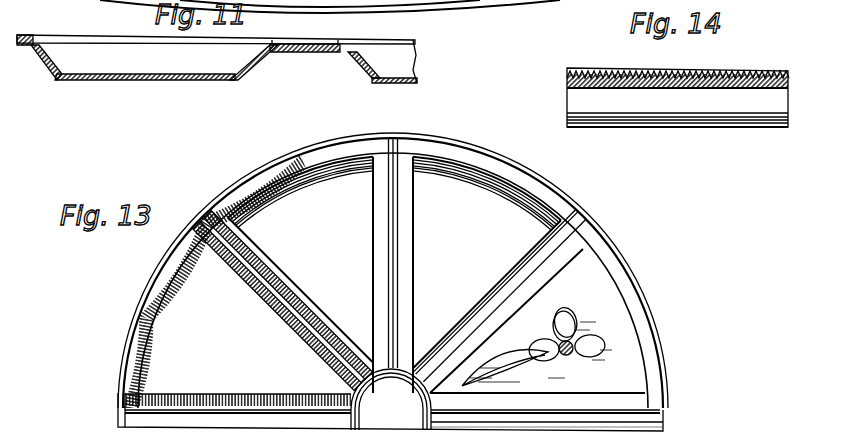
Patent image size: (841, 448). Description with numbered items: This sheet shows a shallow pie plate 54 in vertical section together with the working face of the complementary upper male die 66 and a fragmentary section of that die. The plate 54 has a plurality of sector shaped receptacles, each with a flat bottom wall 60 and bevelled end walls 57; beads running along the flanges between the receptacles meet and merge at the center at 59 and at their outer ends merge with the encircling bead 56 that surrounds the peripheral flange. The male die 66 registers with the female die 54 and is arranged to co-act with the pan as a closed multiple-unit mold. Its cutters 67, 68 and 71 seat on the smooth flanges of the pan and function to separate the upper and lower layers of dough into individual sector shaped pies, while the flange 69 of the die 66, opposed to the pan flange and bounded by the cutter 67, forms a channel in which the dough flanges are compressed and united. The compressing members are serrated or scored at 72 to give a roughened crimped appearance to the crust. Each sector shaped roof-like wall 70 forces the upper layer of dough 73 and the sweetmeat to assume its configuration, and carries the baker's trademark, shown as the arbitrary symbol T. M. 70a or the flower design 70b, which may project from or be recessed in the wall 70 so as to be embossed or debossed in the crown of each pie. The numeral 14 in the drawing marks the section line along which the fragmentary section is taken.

In FIG. 11, the plate 54 is at (214, 69).
In FIG. 11, the encircling bead 56 is at (22, 36).
In FIG. 11, the end walls 57 is at (56, 62).
In FIG. 11, the center merging point of beads 59 is at (274, 42).
In FIG. 11, the flat bottom wall 60 is at (178, 70).
In FIG. 14, the male die 66 is at (655, 98).
In FIG. 13, the male die 66 is at (378, 270).
In FIG. 13, the cutter 67 is at (545, 180).
In FIG. 13, the cutter 68 is at (570, 248).
In FIG. 14, the flange 69 is at (788, 88).
In FIG. 13, the flange 69 is at (617, 273).
In FIG. 13, the sector shaped roof-like wall 70 is at (625, 338).
In FIG. 13, the trademark symbol T. M. 70a is at (198, 332).
In FIG. 13, the flower design 70b is at (612, 378).
In FIG. 13, the cutter 71 is at (432, 428).
In FIG. 14, the serrations 72 is at (720, 88).
In FIG. 13, the serrations 72 is at (132, 366).
In FIG. 13, the upper layer of dough 73 is at (495, 430).
In FIG. 13, the partition rib 14 is at (265, 256).